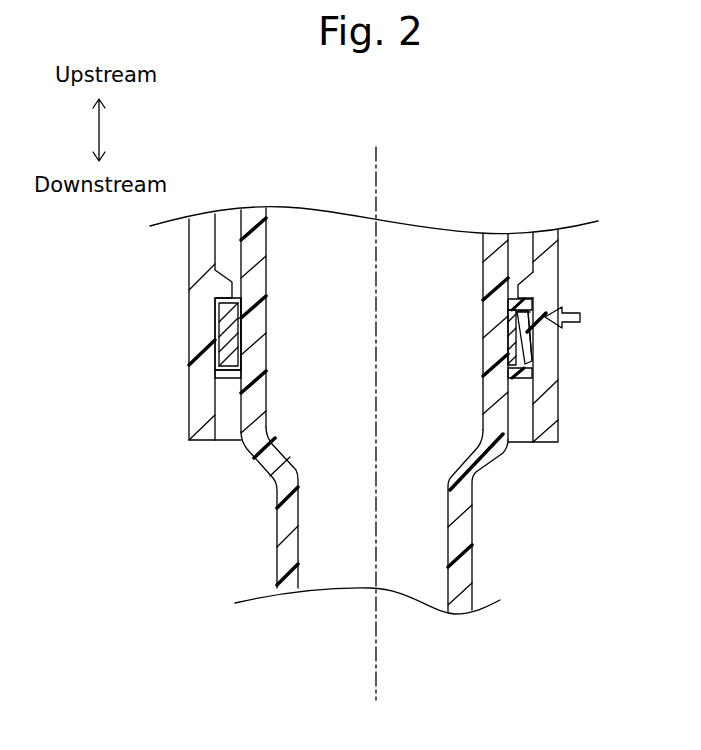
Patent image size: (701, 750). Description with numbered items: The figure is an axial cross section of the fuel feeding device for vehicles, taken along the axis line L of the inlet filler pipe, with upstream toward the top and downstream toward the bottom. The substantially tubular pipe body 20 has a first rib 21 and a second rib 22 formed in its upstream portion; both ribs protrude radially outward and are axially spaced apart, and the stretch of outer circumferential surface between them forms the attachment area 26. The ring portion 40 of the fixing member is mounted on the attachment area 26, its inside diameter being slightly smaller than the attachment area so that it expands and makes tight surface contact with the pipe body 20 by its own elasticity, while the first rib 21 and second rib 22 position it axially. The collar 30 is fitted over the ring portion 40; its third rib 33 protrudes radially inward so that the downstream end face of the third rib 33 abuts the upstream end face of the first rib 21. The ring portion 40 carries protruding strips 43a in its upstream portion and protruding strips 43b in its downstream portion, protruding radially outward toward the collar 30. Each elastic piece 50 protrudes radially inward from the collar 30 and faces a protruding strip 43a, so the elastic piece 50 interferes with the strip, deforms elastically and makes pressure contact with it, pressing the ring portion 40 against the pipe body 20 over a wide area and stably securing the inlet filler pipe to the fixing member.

The pipe body 20 is at (456, 548).
The first rib 21 is at (518, 300).
The second rib 22 is at (527, 377).
The attachment area 26 is at (240, 348).
The collar 30 is at (200, 247).
The third rib 33 is at (522, 283).
The ring portion 40 is at (237, 325).
The upstream-side protruding strips 43a is at (520, 321).
The downstream-side protruding strips 43b is at (536, 353).
The elastic piece 50 is at (543, 329).
The axis line L is at (378, 163).